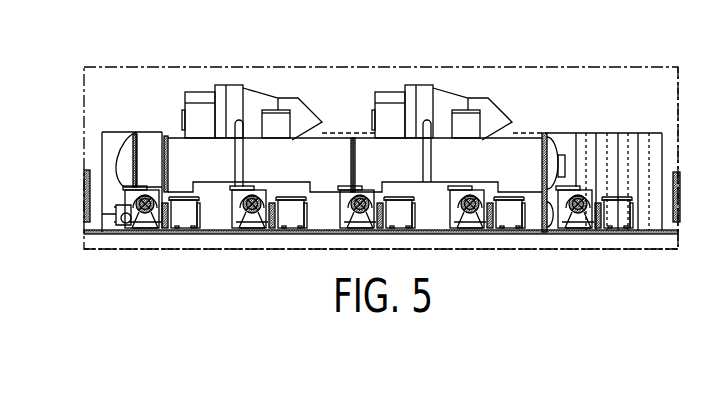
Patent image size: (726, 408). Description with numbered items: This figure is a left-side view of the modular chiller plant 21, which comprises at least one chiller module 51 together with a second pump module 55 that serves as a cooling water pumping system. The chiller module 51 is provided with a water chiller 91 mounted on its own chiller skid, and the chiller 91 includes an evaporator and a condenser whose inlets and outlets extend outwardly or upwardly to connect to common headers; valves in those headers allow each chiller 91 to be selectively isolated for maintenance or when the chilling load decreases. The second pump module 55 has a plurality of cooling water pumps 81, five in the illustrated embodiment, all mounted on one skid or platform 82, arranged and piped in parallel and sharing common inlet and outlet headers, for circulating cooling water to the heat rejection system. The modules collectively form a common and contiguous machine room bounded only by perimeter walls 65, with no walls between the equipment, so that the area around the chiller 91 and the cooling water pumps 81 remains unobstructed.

The modular chiller plant 21 is at (465, 66).
The chiller 91 is at (333, 155).
The walls 65 is at (678, 112).
The second pump module 55 is at (153, 232).
The chiller module 51 is at (218, 242).
The skid or platform 82 is at (266, 234).
The cooling water pumps 81 is at (588, 226).